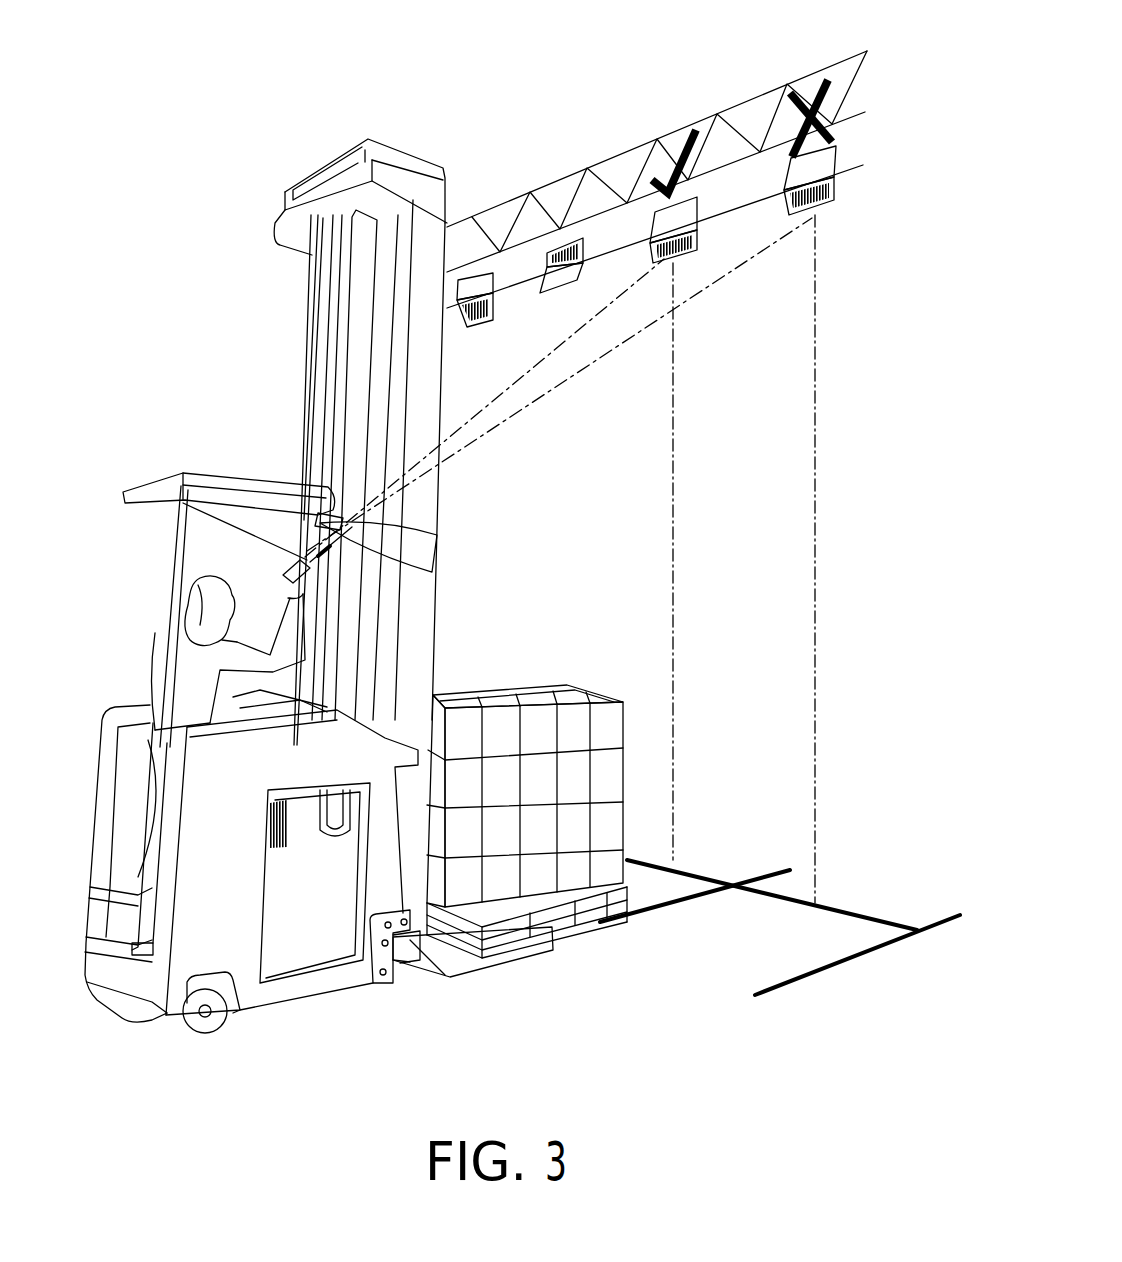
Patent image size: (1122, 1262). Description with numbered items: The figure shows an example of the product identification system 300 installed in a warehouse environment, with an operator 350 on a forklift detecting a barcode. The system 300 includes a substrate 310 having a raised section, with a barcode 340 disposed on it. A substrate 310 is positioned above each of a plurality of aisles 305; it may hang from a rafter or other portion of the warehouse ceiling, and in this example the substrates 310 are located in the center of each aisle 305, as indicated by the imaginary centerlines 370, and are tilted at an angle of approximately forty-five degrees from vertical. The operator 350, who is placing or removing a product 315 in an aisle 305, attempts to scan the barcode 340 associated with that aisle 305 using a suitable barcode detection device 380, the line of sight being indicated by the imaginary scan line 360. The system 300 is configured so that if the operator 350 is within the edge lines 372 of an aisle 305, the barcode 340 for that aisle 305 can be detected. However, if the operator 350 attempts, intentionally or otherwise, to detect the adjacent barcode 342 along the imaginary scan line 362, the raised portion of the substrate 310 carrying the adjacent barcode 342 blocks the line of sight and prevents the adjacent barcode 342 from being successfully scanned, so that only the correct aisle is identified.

The product identification system 300 is at (868, 150).
The aisle 305 is at (636, 987).
The substrate 310 is at (788, 176).
The product 315 is at (518, 678).
The barcode 340 is at (657, 238).
The adjacent barcode 342 is at (828, 200).
The operator 350 is at (150, 630).
The imaginary scan line 360 is at (513, 388).
The imaginary scan line 362 is at (537, 400).
The imaginary centerline 370 is at (813, 487).
The edge line 372 is at (850, 946).
The barcode detection device 380 is at (292, 565).